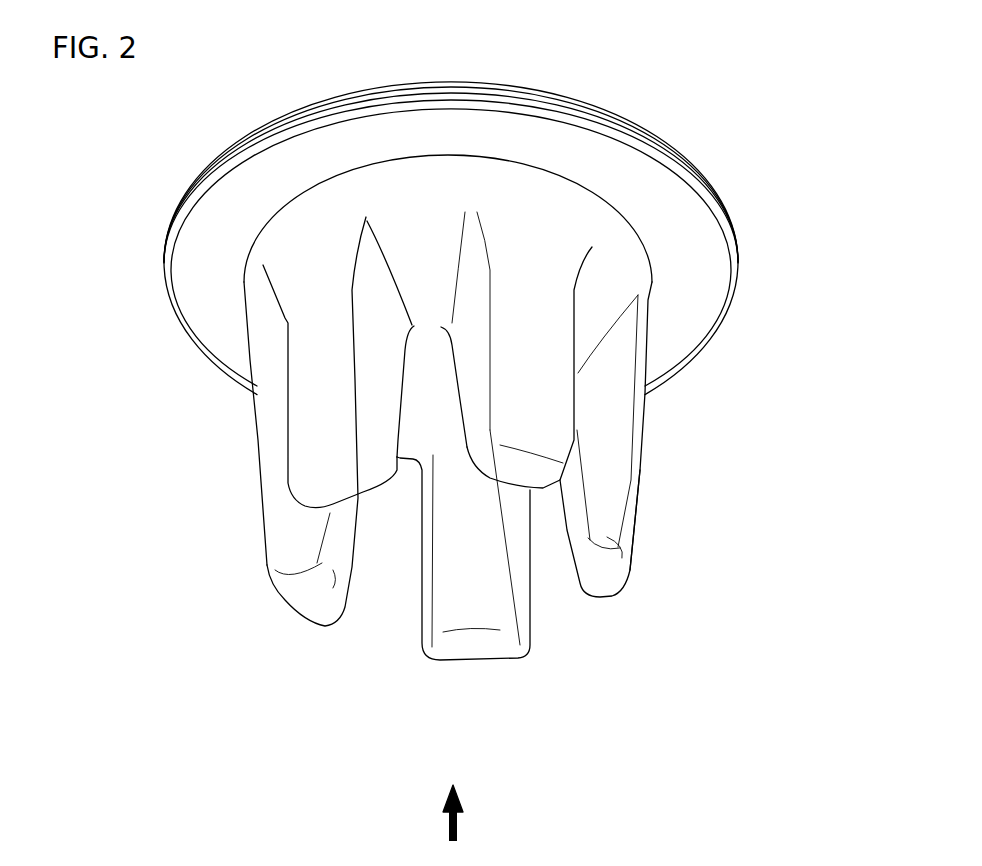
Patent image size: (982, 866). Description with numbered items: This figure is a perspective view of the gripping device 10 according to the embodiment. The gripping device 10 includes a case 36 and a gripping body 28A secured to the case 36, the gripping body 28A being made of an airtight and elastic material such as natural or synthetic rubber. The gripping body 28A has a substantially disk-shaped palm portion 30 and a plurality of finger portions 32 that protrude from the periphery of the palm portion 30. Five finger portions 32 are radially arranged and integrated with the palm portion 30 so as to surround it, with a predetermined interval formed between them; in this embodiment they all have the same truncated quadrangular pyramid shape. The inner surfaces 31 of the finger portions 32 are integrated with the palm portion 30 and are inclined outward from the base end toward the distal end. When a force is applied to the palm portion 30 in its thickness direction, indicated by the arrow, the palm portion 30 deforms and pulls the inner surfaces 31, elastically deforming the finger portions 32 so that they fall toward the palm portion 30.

The gripping device 10 is at (735, 179).
The case 36 is at (707, 290).
The gripping body 28A is at (663, 423).
The palm portion 30 is at (422, 427).
The inner surface 31 is at (342, 578).
The finger portion 32 is at (330, 438).